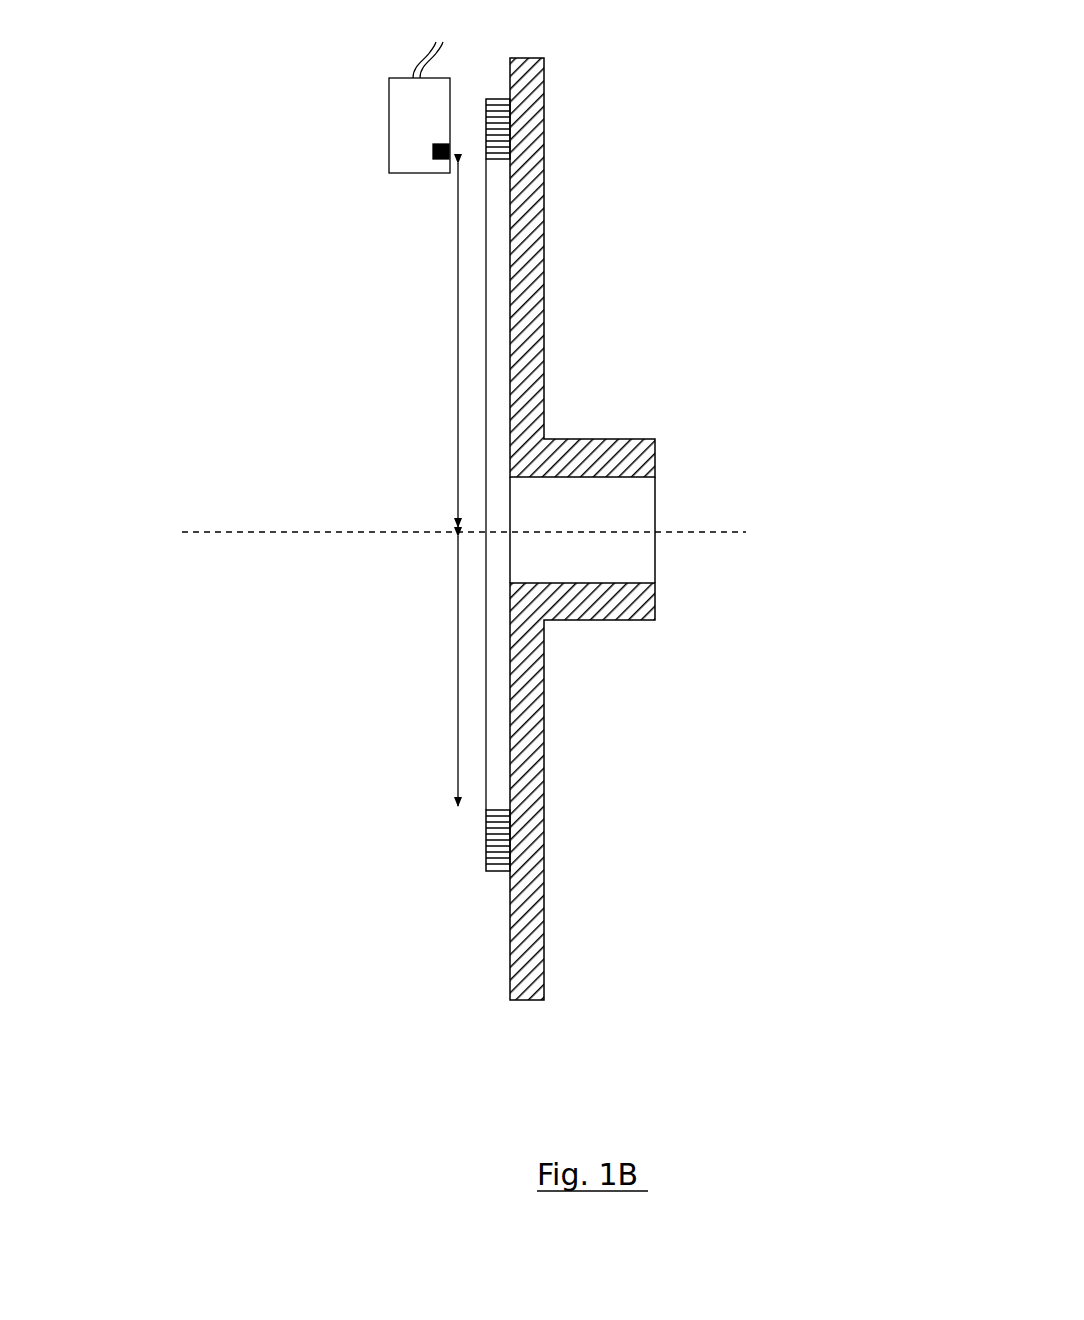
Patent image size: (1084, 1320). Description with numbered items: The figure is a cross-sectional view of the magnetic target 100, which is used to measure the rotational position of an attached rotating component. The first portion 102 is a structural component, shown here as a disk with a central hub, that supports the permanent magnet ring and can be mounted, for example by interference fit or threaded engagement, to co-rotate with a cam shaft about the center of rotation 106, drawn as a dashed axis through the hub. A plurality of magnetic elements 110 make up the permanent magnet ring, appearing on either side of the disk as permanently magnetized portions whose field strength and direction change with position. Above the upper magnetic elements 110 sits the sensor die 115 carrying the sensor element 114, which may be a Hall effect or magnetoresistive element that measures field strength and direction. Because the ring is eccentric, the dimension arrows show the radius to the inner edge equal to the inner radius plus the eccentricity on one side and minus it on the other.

The magnetic target 100 is at (240, 337).
The first portion 102 is at (544, 224).
The center of rotation (COR) 106 is at (292, 531).
The magnetic elements 110 is at (498, 162).
The sensor element 114 is at (441, 143).
The sensor die 115 is at (419, 107).